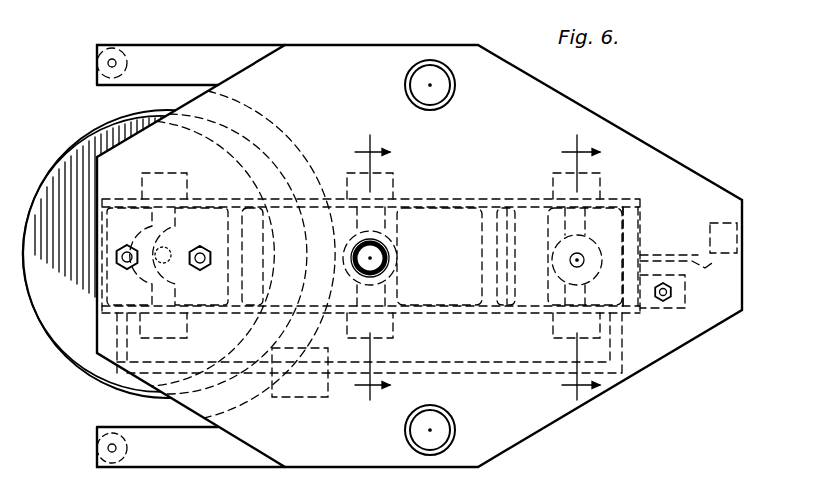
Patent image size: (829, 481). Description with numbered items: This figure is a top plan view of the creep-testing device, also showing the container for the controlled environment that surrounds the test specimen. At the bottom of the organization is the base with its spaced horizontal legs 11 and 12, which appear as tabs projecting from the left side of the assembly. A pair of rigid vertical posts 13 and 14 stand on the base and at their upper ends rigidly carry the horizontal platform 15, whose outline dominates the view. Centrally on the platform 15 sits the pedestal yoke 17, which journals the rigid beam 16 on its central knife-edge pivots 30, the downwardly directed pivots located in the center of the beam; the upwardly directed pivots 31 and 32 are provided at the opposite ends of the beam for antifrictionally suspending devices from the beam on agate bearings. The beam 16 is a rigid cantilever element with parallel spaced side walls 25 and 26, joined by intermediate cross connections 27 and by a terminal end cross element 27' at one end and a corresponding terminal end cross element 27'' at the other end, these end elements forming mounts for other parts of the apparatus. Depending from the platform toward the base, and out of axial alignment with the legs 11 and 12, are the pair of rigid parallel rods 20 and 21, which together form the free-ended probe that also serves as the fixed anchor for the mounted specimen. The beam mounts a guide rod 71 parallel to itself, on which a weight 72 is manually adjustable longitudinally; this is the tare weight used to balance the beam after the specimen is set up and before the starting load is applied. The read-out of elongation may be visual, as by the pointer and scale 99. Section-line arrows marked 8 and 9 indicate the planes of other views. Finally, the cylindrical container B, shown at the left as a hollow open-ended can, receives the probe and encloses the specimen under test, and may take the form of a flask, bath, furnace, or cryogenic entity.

The section line arrows 8 is at (361, 273).
The section line arrows 9 is at (580, 269).
The horizontal leg 11 is at (180, 33).
The horizontal leg 12 is at (140, 448).
The vertical post 13 is at (428, 83).
The vertical post 14 is at (428, 428).
The horizontal platform 15 is at (582, 113).
The beam 16 is at (505, 333).
The pedestal yoke 17 is at (398, 243).
The depending rod 20 is at (122, 246).
The depending rod 21 is at (213, 237).
The side wall 25 is at (371, 245).
The side wall 26 is at (371, 329).
The cross connection 27 is at (441, 256).
The terminal end cross element 27' is at (244, 254).
The terminal end cross element 27'' is at (135, 290).
The downwardly directed pivot 30 is at (393, 190).
The upwardly directed pivot 31 is at (167, 197).
The upwardly directed pivot 32 is at (600, 190).
The guide rod 71 is at (473, 377).
The weight 72 is at (312, 392).
The pointer and scale 99 is at (698, 270).
The cylindrical container B is at (65, 353).